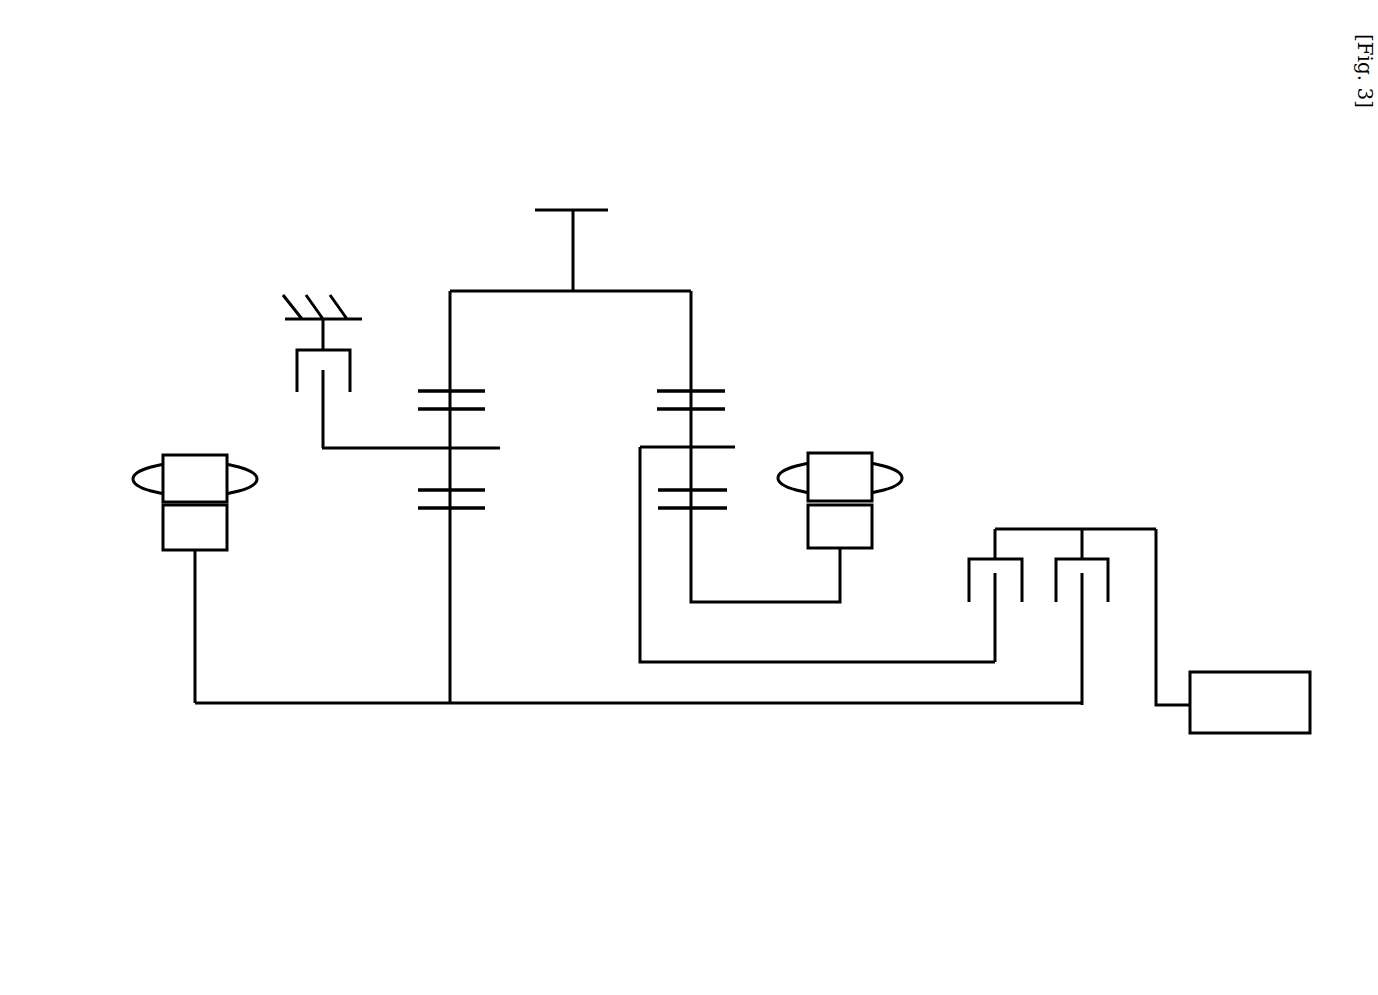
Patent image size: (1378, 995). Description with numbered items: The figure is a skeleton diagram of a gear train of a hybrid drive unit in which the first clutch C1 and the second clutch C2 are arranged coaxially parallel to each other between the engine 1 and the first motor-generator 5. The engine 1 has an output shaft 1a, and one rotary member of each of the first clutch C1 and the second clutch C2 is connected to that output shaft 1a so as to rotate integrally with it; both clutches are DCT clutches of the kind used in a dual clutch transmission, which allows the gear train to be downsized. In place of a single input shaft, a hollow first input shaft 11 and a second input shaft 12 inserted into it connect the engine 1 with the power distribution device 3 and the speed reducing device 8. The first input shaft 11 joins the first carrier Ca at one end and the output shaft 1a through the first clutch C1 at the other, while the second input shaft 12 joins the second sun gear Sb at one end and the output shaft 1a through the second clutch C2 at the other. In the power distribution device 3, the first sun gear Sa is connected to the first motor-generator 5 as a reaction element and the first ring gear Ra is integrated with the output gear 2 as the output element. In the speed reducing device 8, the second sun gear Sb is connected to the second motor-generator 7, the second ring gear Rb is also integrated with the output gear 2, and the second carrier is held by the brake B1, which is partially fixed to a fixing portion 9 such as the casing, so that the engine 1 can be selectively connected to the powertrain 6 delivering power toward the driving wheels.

The engine 1 is at (1260, 672).
The output shaft 1a is at (1168, 708).
The output gear 2 is at (603, 210).
The power distribution device 3 is at (758, 319).
The first motor-generator 5 is at (889, 445).
The powertrain 6 is at (498, 732).
The second motor-generator 7 is at (189, 437).
The speed reducing device 8 is at (424, 282).
The fixing portion 9 is at (353, 318).
The first input shaft 11 is at (911, 660).
The second input shaft 12 is at (926, 706).
The brake B1 is at (277, 365).
The first clutch C1 is at (969, 546).
The second clutch C2 is at (1102, 547).
The first ring gear Ra is at (725, 394).
The first carrier Ca is at (640, 468).
The first sun gear Sa is at (722, 500).
The second ring gear Rb is at (426, 394).
The second sun gear Sb is at (425, 504).